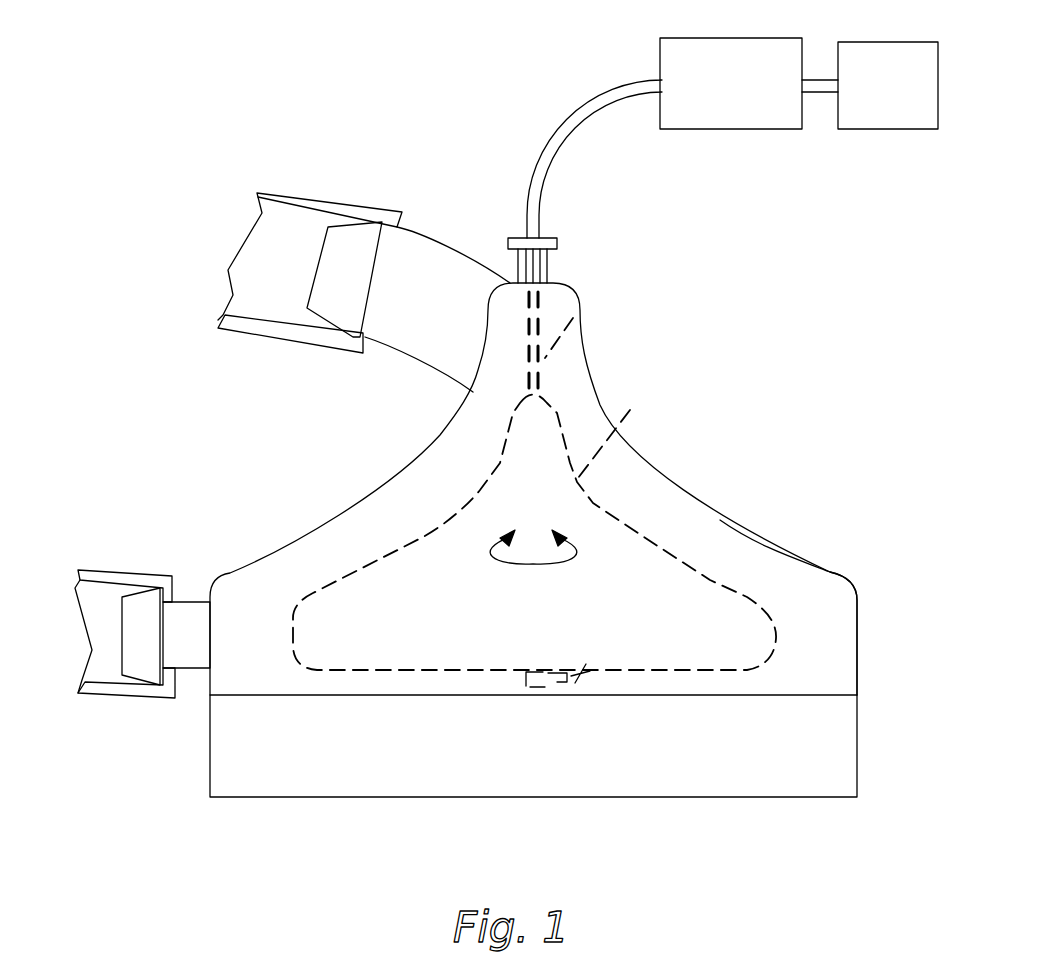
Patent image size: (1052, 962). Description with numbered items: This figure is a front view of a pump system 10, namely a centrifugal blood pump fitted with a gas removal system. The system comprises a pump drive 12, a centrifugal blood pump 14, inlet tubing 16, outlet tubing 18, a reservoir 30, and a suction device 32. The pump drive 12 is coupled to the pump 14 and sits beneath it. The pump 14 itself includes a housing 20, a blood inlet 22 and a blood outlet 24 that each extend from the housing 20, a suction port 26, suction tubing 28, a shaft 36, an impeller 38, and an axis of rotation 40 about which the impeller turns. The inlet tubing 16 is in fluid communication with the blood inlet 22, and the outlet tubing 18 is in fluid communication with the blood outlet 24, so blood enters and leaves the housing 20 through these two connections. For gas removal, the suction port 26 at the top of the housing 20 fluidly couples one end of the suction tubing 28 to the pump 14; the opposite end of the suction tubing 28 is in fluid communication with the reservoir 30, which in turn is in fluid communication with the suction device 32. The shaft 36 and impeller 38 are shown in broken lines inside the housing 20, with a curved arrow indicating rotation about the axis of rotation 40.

The pump system 10 is at (410, 115).
The pump drive 12 is at (718, 798).
The centrifugal blood pump 14 is at (690, 493).
The inlet tubing 16 is at (302, 228).
The outlet tubing 18 is at (103, 592).
The housing 20 is at (768, 580).
The blood inlet 22 is at (427, 268).
The blood outlet 24 is at (195, 617).
The suction port 26 is at (533, 263).
The suction tubing 28 is at (578, 127).
The reservoir 30 is at (731, 83).
The suction device 32 is at (870, 85).
The shaft 36 is at (583, 312).
The impeller 38 is at (638, 407).
The axis of rotation 40 is at (533, 562).